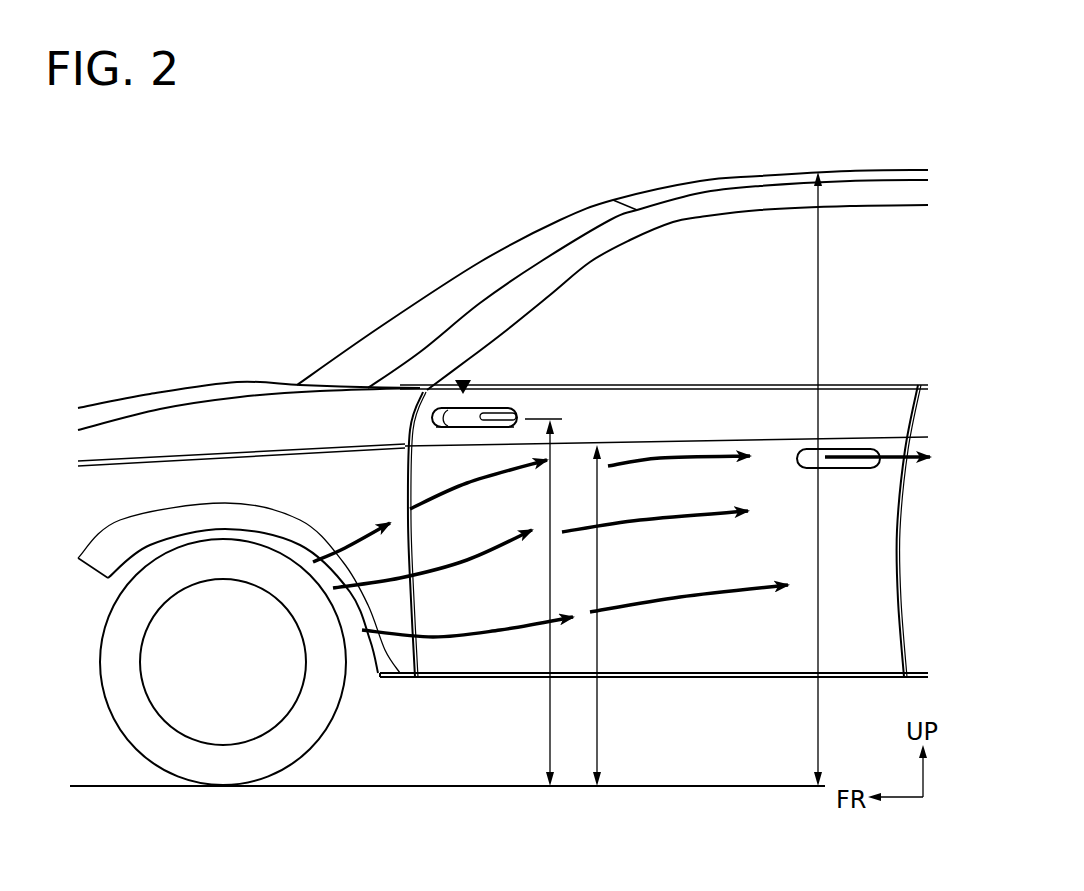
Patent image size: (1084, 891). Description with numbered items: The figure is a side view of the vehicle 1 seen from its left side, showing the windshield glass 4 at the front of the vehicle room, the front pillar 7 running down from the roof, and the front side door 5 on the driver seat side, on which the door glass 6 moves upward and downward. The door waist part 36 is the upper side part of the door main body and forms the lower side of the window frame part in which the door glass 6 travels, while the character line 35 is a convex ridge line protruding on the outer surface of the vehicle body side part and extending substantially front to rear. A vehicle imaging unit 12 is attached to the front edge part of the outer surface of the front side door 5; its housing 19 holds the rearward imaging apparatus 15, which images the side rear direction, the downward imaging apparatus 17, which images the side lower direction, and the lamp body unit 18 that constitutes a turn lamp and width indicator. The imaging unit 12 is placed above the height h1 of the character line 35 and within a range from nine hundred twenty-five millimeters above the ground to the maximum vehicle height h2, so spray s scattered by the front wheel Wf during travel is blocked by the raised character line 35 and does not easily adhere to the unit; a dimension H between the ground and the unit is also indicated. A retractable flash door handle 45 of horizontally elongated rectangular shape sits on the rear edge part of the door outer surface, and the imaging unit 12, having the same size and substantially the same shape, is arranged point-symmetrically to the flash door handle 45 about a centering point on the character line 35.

The vehicle 1 is at (728, 150).
The windshield glass 4 is at (377, 327).
The front side door 5 is at (783, 663).
The door glass 6 is at (608, 294).
The front pillar 7 is at (497, 296).
The vehicle imaging unit 12 is at (463, 390).
The rearward imaging apparatus 15 is at (525, 418).
The downward imaging apparatus 17 is at (480, 428).
The lamp body unit 18 is at (503, 412).
The housing 19 is at (437, 410).
The character line 35 is at (736, 438).
The door waist part 36 is at (660, 385).
The retractable flash door handle 45 is at (862, 449).
The spray s is at (360, 632).
The front wheel Wf is at (232, 786).
The height H is at (550, 715).
The height of the character line h1 is at (597, 716).
The maximum vehicle height h2 is at (818, 708).